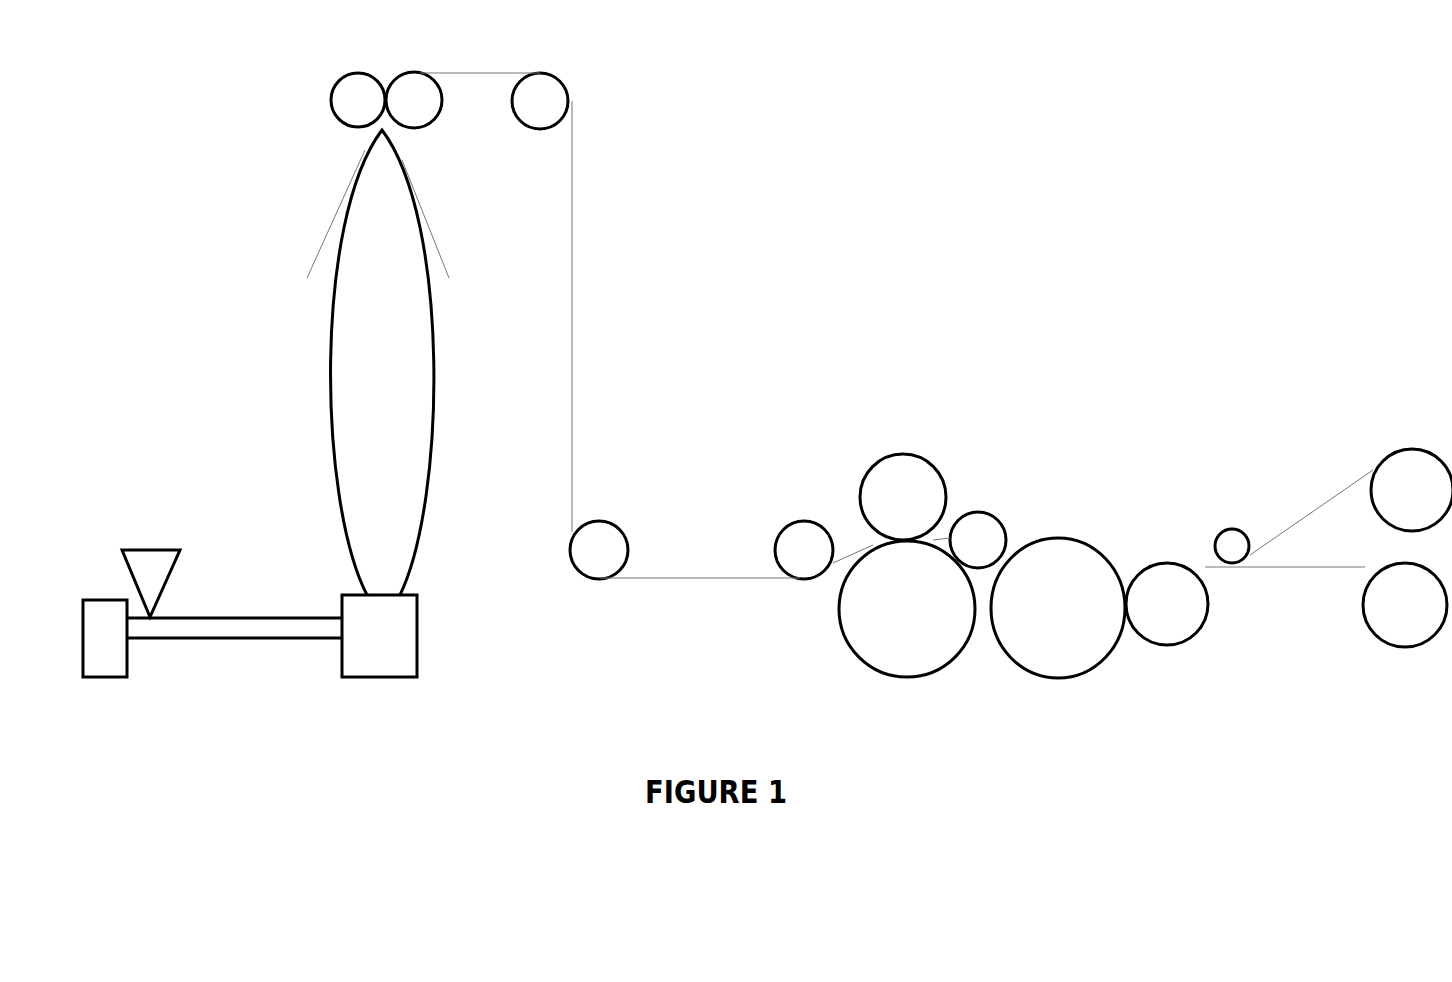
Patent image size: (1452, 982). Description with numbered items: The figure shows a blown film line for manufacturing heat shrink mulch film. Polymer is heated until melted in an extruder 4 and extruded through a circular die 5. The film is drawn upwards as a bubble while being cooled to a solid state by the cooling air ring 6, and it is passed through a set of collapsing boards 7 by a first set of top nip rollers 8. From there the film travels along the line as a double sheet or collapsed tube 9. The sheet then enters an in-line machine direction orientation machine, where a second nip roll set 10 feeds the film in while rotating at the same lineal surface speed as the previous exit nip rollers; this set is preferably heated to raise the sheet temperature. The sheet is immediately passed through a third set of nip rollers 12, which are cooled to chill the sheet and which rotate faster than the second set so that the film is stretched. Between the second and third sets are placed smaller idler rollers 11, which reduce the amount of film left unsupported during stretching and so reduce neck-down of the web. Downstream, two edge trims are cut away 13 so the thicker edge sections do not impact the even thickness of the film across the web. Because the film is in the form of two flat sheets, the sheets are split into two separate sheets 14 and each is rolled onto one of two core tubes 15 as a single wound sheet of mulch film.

The extruder 4 is at (270, 612).
The circular die 5 is at (428, 637).
The cooling air ring 6 is at (327, 431).
The collapsing boards 7 is at (327, 232).
The top nip rollers 8 is at (325, 100).
The double sheet or collapsed tube 9 is at (575, 292).
The second nip roll set 10 is at (862, 473).
The idler rollers 11 is at (997, 517).
The third set of nip rollers 12 is at (1107, 655).
The edge trims 13 is at (1215, 538).
The separate sheets 14 is at (1308, 503).
The core tubes 15 is at (1398, 448).